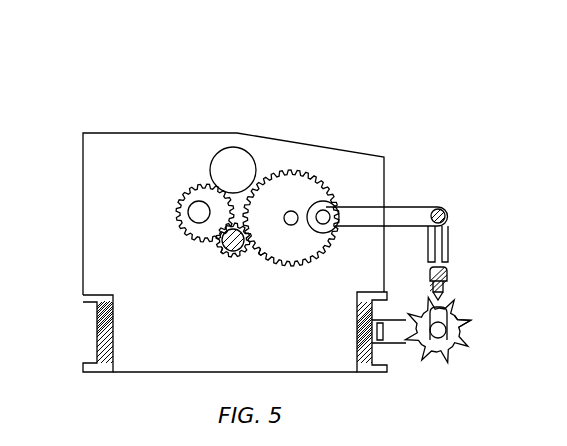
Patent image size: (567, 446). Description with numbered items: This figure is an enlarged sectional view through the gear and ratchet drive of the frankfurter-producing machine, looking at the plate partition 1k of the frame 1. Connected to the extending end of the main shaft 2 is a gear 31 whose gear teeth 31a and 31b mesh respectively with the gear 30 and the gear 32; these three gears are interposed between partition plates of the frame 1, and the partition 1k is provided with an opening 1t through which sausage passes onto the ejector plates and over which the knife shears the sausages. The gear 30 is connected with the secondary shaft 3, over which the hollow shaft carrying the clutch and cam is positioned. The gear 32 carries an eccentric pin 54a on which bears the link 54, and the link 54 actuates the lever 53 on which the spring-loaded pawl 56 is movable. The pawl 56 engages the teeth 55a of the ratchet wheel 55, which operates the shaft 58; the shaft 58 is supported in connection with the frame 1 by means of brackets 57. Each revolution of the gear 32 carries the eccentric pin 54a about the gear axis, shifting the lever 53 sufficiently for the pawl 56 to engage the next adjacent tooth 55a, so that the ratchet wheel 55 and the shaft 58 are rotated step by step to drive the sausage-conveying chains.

The plate partition 1k is at (108, 133).
The opening 1t is at (243, 148).
The frame 1 is at (97, 336).
The shaft 2 is at (237, 252).
The secondary shaft 3 is at (199, 212).
The gear 30 is at (196, 185).
The gear 31 is at (218, 248).
The gear teeth 31a is at (227, 258).
The gear teeth 31b is at (261, 257).
The gear 32 is at (290, 170).
The lever 53 is at (450, 240).
The link 54 is at (395, 207).
The eccentric pin 54a is at (325, 210).
The ratchet wheel 55 is at (458, 305).
The teeth 55a is at (480, 310).
The pawl 56 is at (448, 282).
The brackets 57 is at (401, 343).
The shaft 58 is at (458, 352).